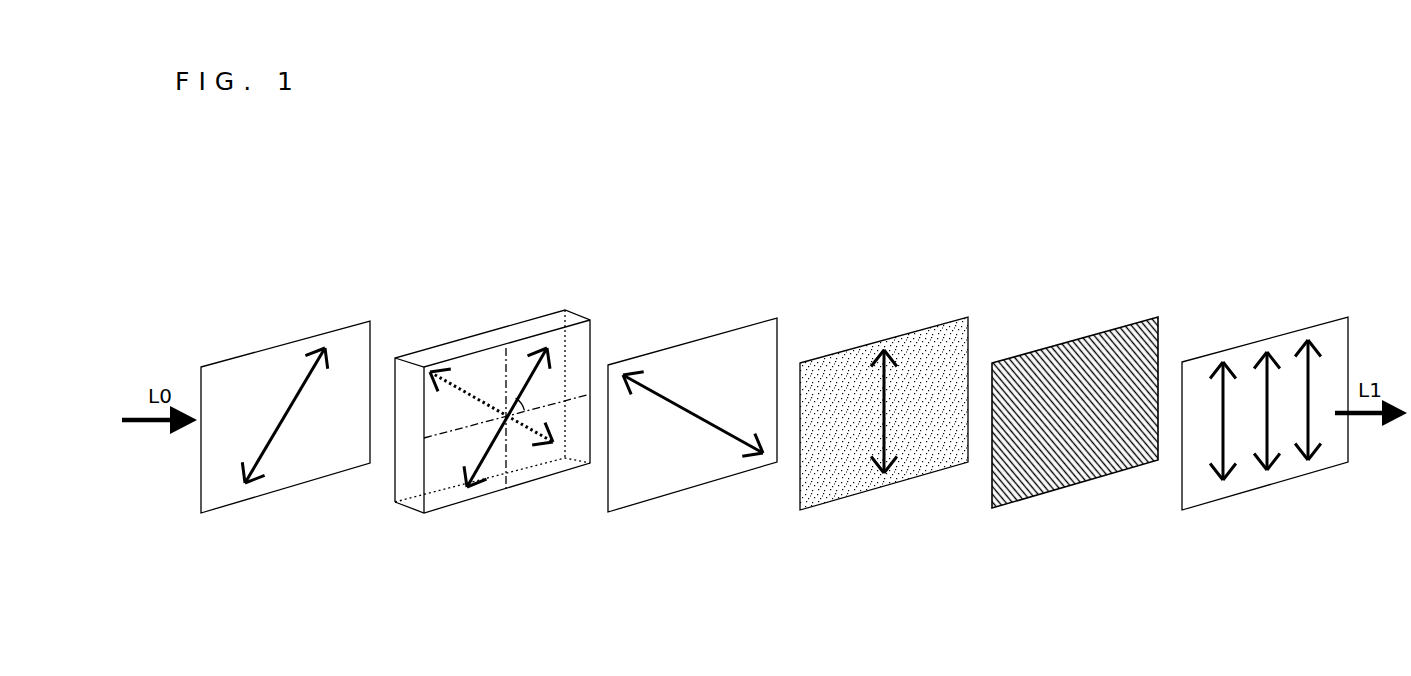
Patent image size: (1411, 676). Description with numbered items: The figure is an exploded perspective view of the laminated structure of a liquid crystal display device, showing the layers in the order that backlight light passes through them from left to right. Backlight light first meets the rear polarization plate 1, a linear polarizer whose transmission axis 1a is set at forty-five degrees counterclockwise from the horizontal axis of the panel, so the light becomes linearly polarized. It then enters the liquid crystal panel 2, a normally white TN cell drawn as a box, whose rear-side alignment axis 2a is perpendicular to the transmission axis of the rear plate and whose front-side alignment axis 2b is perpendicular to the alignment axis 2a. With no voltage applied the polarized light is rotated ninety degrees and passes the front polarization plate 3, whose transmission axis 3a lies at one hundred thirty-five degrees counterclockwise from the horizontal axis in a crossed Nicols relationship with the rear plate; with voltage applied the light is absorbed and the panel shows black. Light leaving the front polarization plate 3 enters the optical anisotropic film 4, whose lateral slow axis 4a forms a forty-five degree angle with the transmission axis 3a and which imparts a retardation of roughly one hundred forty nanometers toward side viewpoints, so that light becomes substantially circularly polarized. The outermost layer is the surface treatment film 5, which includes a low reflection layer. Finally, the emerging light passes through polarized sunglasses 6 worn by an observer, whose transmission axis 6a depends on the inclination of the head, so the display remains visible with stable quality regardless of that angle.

The rear polarization plate 1 is at (284, 343).
The transmission axis 1a is at (268, 452).
The liquid crystal panel 2 is at (490, 343).
The alignment axis 2a is at (463, 395).
The alignment axis 2b is at (487, 450).
The front polarization plate 3 is at (693, 342).
The transmission axis 3a is at (693, 420).
The optical anisotropic film 4 is at (887, 340).
The lateral slow axis 4a is at (887, 440).
The surface treatment film 5 is at (1072, 340).
The polarized sunglasses 6 is at (1267, 337).
The transmission axis 6a is at (1267, 437).